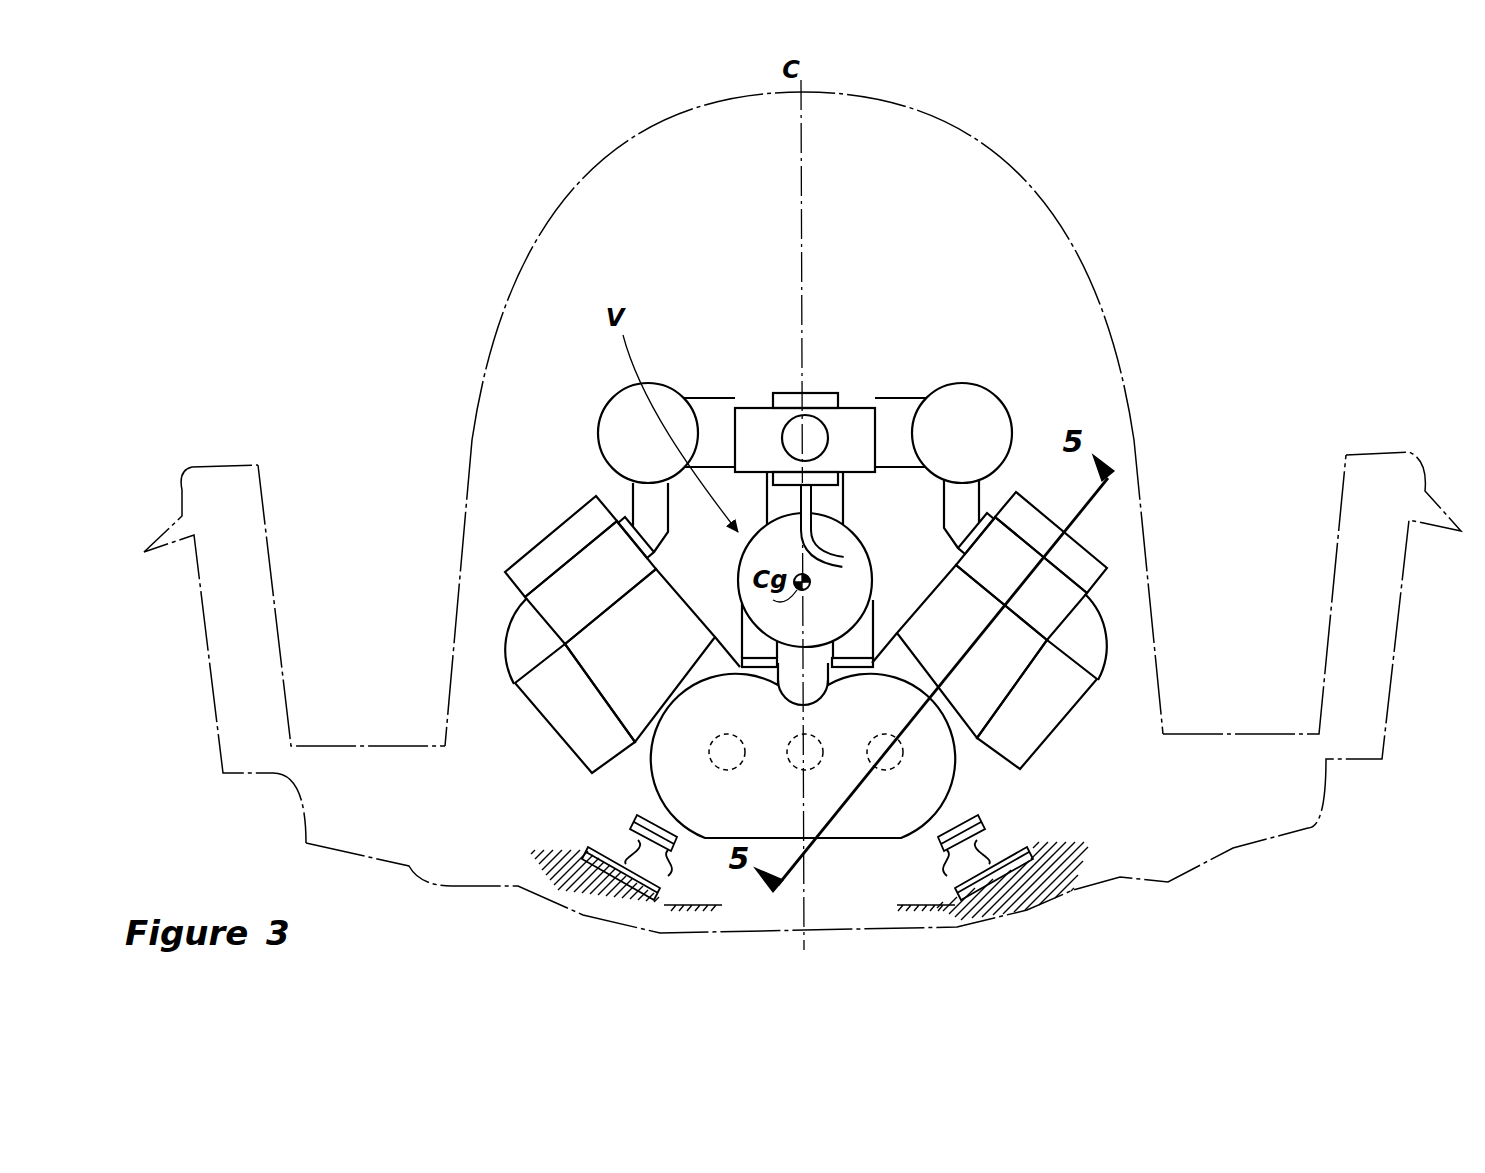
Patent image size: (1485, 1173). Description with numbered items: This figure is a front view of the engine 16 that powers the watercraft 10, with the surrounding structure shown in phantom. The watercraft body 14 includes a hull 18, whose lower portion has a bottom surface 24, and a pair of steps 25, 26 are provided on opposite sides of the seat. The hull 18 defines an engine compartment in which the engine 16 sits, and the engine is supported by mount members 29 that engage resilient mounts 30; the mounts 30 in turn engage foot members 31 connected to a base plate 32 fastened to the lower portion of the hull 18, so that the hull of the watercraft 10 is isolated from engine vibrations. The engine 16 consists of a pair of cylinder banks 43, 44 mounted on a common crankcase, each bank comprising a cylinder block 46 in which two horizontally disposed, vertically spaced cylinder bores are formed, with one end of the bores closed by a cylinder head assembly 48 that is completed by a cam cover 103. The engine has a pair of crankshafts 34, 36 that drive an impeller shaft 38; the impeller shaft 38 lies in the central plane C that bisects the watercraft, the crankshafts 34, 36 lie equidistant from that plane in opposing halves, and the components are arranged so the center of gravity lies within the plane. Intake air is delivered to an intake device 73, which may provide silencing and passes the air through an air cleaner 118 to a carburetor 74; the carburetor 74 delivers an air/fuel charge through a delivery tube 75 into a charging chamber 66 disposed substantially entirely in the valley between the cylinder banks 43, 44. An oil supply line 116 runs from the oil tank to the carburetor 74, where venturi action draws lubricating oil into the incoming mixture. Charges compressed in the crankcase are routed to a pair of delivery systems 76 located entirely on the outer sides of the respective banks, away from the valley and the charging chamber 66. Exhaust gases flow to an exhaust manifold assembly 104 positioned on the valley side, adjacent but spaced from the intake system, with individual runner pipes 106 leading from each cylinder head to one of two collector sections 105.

The watercraft 10 is at (1086, 219).
The watercraft body 14 is at (1152, 500).
The engine 16 is at (880, 256).
The hull 18 is at (1135, 420).
The bottom surface 24 is at (1122, 878).
The step 25 is at (375, 700).
The step 26 is at (1247, 718).
The mount member 29 is at (682, 829).
The resilient mount 30 is at (640, 843).
The foot member 31 is at (563, 843).
The base plate 32 is at (543, 848).
The crankshaft 34 is at (912, 750).
The crankshaft 36 is at (708, 747).
The impeller shaft 38 is at (790, 763).
The cylinder bank 43 is at (985, 665).
The cylinder bank 44 is at (636, 634).
The cylinder block 46 is at (587, 660).
The cylinder head assembly 48 is at (553, 617).
The charging chamber 66 is at (849, 592).
The intake device 73 is at (795, 418).
The carburetor 74 is at (822, 393).
The delivery tube 75 is at (838, 507).
The delivery system 76 is at (515, 720).
The cam cover 103 is at (570, 520).
The exhaust manifold assembly 104 is at (705, 426).
The collector section 105 is at (600, 417).
The runner pipe 106 is at (632, 497).
The oil supply line 116 is at (830, 553).
The air cleaner 118 is at (864, 438).